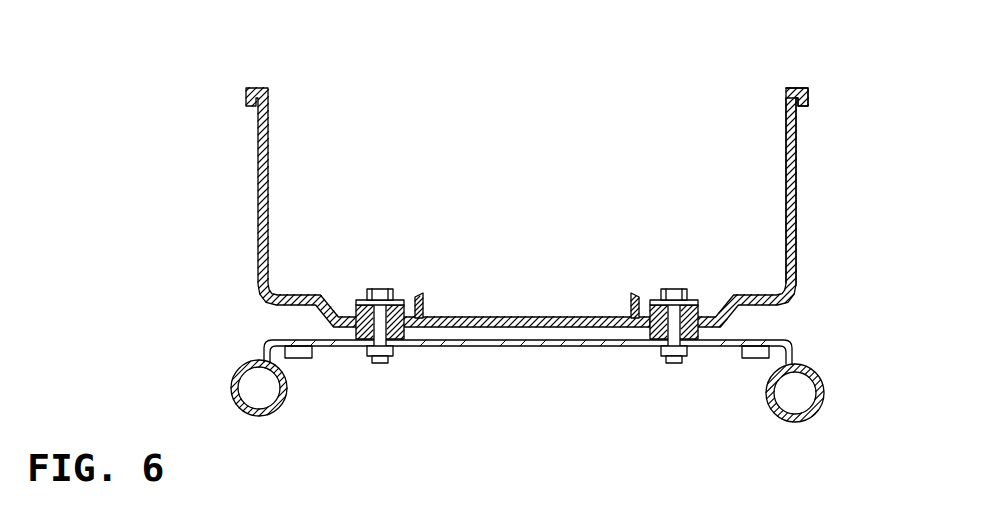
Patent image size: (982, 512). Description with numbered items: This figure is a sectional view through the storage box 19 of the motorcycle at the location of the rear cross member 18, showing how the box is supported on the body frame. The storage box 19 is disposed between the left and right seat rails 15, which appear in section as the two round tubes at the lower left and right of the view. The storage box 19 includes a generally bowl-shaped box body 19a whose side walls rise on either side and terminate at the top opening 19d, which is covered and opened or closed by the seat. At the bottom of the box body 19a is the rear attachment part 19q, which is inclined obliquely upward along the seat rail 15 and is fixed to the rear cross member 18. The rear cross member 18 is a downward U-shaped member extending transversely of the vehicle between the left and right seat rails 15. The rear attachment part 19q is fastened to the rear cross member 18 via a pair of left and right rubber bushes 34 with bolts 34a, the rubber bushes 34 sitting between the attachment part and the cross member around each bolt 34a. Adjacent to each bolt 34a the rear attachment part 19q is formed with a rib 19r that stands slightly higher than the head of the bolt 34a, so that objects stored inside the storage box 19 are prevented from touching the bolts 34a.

The seat rail 15 is at (232, 384).
The rear cross member 18 is at (490, 347).
The storage box 19 is at (254, 149).
The box body 19a is at (800, 172).
The top opening 19d is at (797, 91).
The rear attachment part 19q is at (522, 317).
The rib 19r is at (421, 296).
The rubber bush 34 is at (402, 343).
The bolt 34a is at (379, 288).